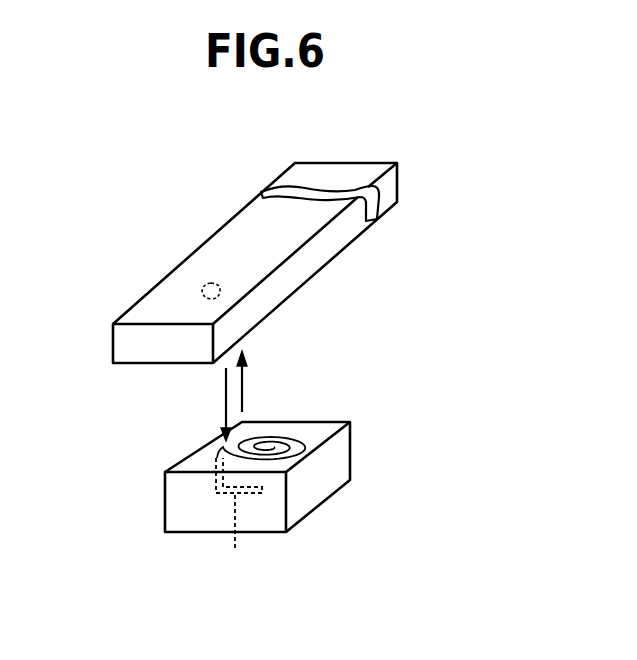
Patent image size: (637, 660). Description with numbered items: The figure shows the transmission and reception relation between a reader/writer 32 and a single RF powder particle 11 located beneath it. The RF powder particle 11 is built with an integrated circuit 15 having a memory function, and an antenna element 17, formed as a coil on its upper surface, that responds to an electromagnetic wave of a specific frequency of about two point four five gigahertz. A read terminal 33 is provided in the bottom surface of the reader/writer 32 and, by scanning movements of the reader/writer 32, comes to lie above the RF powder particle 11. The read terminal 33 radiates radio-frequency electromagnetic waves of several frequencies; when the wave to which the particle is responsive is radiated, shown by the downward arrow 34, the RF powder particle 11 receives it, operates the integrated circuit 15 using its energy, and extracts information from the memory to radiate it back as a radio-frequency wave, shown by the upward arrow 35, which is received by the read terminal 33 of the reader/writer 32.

The RF powder particle 11 is at (352, 452).
The integrated circuit 15 is at (239, 519).
The antenna element 17 is at (217, 453).
The reader/writer 32 is at (217, 231).
The read terminal 33 is at (202, 289).
The arrow 34 is at (225, 403).
The arrow 35 is at (243, 378).